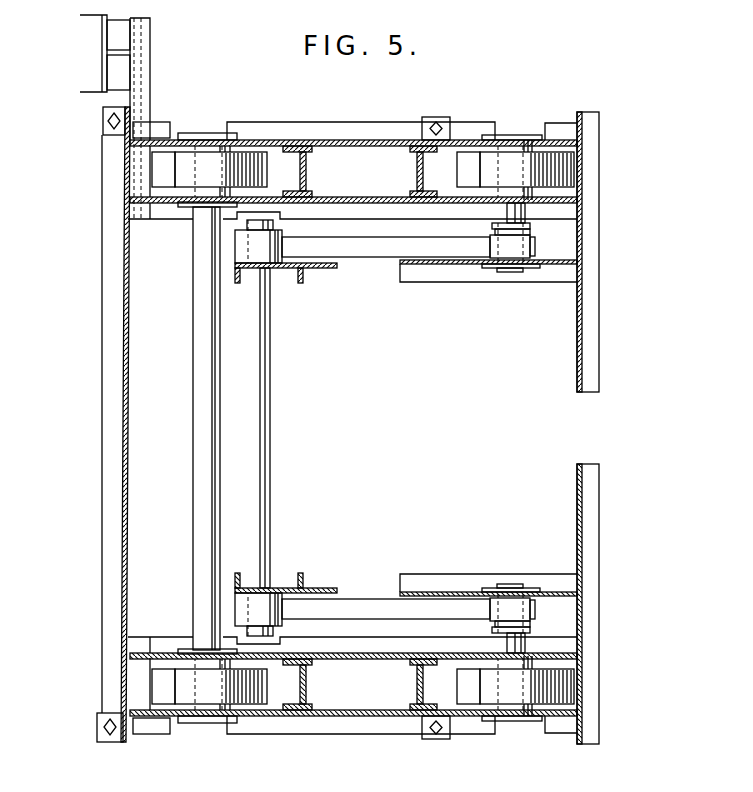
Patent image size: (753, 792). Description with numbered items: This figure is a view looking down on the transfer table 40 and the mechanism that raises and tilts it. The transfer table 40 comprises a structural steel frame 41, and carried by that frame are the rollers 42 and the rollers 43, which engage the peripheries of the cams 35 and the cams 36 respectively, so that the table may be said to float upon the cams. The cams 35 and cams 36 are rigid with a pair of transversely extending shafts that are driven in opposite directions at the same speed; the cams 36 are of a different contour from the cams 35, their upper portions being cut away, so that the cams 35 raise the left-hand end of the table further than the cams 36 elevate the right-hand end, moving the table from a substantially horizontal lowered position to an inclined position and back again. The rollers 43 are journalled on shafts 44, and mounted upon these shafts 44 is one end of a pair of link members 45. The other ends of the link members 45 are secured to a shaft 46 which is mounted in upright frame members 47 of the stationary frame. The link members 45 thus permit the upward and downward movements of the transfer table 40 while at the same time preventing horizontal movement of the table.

The cams 35 is at (160, 163).
The cams 36 is at (467, 160).
The transfer table 40 is at (342, 140).
The structural steel frame 41 is at (383, 197).
The rollers 42 is at (215, 167).
The rollers 43 is at (510, 165).
The shafts 44 is at (507, 213).
The link members 45 is at (386, 247).
The shaft 46 is at (270, 387).
The upright frame members 47 is at (283, 272).